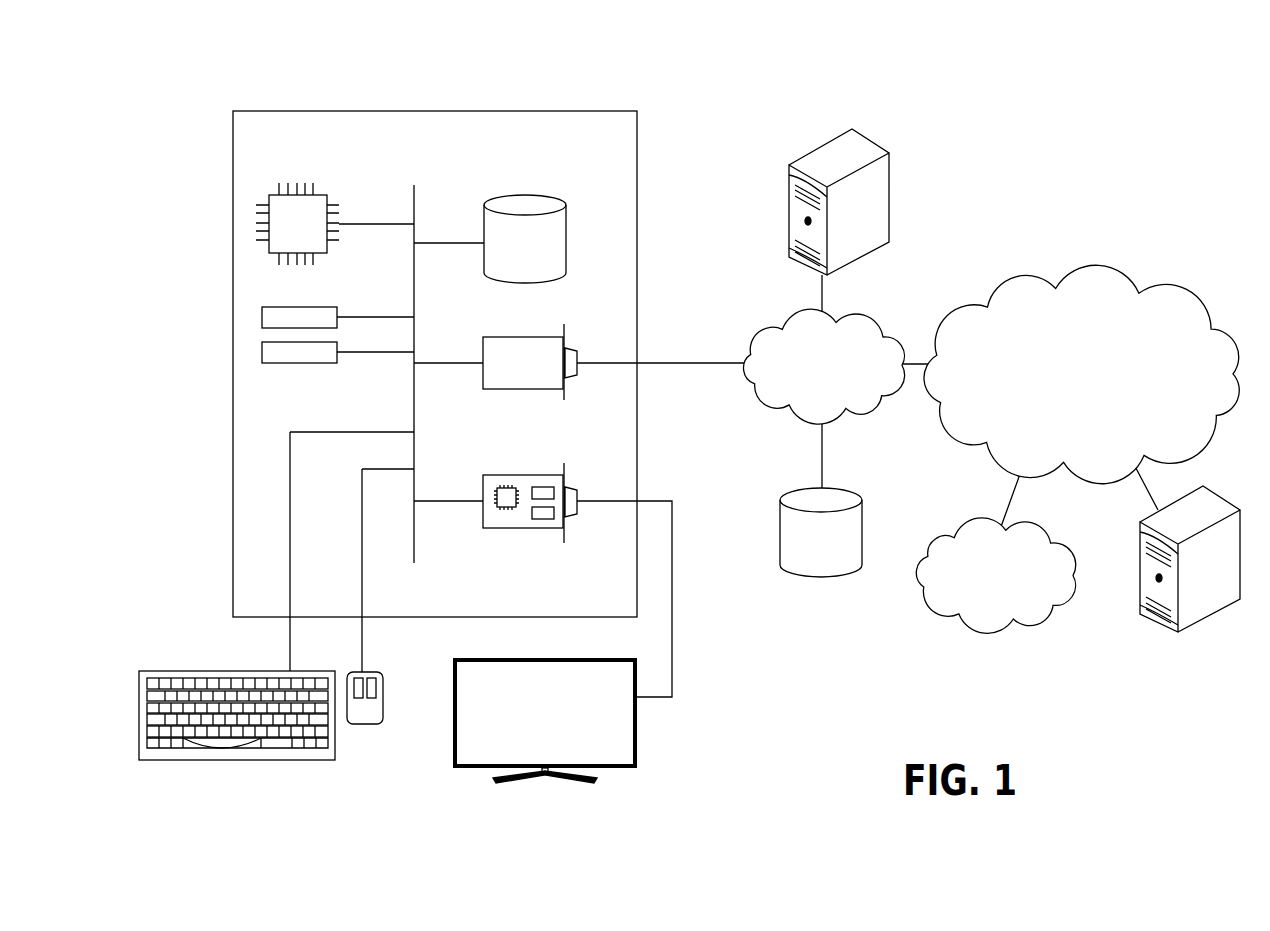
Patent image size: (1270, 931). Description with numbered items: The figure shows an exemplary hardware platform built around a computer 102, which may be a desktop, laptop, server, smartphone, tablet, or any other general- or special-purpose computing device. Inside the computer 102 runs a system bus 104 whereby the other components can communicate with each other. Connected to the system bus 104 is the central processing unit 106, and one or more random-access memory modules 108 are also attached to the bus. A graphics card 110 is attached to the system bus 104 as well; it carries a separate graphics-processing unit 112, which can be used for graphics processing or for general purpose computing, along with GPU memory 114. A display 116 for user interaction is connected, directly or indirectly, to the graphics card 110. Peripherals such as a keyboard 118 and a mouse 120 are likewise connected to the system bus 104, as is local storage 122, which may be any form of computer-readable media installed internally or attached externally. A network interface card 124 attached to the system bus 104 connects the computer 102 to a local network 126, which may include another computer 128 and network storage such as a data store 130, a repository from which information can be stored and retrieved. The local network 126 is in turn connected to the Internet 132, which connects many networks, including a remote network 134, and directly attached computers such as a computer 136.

The computer 102 is at (592, 111).
The system bus 104 is at (415, 195).
The central processing unit 106 is at (320, 189).
The memory modules 108 is at (337, 350).
The graphics card 110 is at (521, 503).
The graphics-processing unit 112 is at (505, 500).
The GPU memory 114 is at (540, 517).
The display 116 is at (637, 748).
The keyboard 118 is at (240, 760).
The mouse 120 is at (362, 724).
The local storage 122 is at (567, 225).
The network interface card 124 is at (482, 348).
The local network 126 is at (873, 320).
The computer 128 is at (873, 140).
The data store 130 is at (855, 488).
The Internet 132 is at (1125, 283).
The remote network 134 is at (1050, 532).
The computer 136 is at (1212, 490).